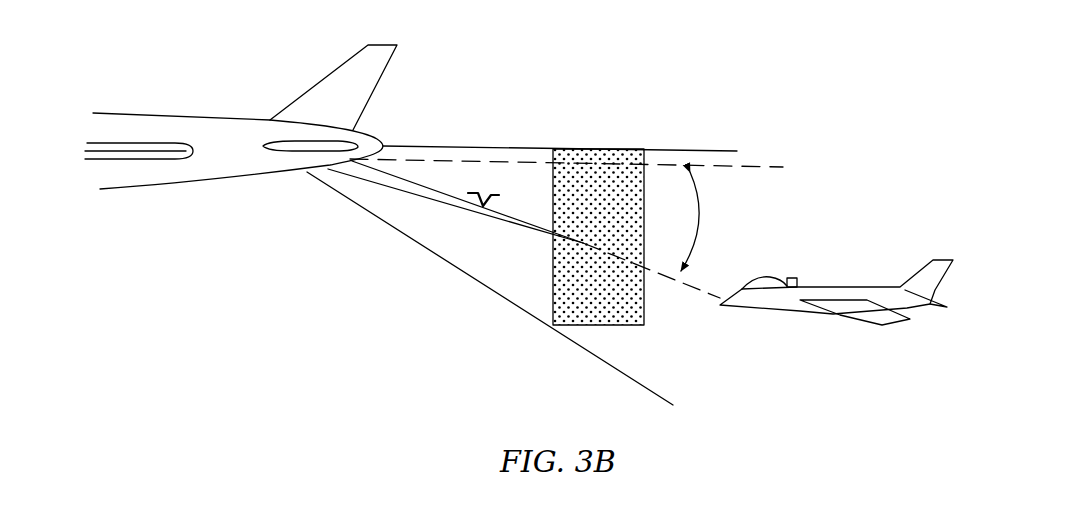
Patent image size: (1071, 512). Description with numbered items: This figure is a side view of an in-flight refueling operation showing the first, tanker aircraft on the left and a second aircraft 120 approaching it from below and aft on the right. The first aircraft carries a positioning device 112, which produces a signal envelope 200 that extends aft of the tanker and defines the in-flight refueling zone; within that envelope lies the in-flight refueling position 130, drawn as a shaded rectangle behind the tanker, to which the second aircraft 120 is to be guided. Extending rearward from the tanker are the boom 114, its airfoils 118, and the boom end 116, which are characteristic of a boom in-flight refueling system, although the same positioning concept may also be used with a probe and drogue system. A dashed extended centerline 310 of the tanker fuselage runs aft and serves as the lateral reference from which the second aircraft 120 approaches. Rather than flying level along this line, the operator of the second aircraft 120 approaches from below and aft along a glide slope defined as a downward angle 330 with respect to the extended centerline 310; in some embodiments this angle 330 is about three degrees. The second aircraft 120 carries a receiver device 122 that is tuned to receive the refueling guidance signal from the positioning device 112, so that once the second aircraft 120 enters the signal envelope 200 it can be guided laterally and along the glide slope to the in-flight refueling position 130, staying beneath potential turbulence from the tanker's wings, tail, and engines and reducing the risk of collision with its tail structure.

The positioning device 112 is at (323, 175).
The boom 114 is at (437, 203).
The boom end 116 is at (583, 244).
The airfoils 118 is at (487, 188).
The second aircraft 120 is at (836, 304).
The receiver device 122 is at (803, 280).
The in-flight refueling position 130 is at (617, 311).
The signal envelope 200 is at (660, 146).
The extended centerline 310 is at (753, 167).
The downward angle 330 is at (707, 232).